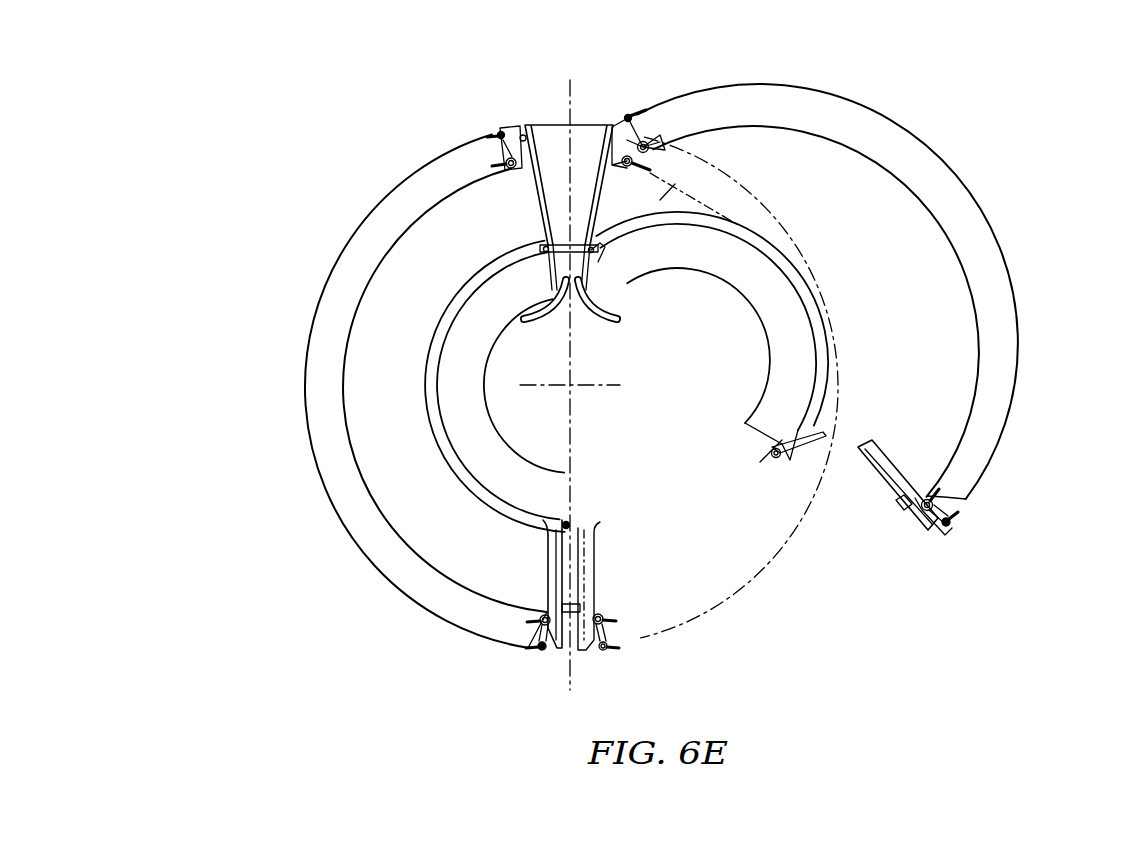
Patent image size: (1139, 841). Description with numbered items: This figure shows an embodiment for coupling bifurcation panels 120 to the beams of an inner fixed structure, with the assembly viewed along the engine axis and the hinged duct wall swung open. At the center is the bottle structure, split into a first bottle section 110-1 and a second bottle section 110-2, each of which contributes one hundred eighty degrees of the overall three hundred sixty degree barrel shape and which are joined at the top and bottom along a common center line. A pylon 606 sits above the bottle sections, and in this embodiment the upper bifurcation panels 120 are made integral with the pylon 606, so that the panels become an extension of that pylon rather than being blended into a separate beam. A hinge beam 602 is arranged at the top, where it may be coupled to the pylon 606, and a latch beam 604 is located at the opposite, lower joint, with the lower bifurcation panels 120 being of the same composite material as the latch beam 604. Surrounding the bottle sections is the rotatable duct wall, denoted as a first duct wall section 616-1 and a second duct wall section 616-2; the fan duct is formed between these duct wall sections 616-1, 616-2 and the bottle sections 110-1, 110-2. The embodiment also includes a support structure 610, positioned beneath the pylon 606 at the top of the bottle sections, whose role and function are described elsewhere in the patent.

The first bottle section 110-1 is at (457, 375).
The second bottle section 110-2 is at (812, 310).
The bifurcation panel 120 is at (557, 575).
The hinge beam 602 is at (502, 130).
The latch beam 604 is at (555, 650).
The pylon 606 is at (557, 126).
The support structure 610 is at (560, 270).
The first duct wall section 616-1 is at (306, 405).
The second duct wall section 616-2 is at (988, 437).